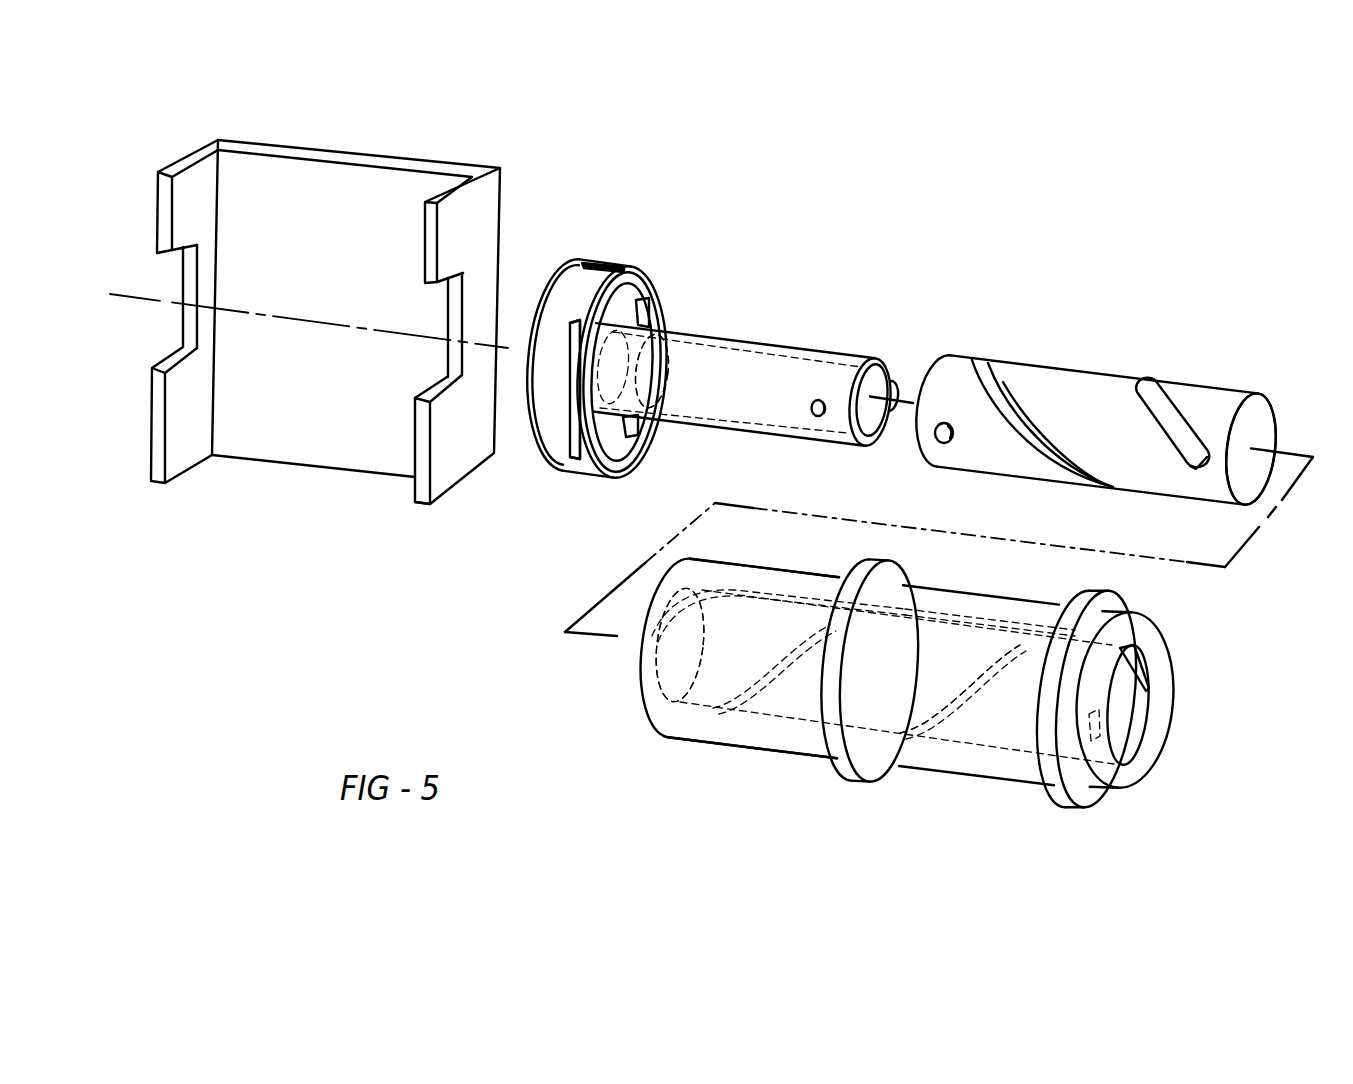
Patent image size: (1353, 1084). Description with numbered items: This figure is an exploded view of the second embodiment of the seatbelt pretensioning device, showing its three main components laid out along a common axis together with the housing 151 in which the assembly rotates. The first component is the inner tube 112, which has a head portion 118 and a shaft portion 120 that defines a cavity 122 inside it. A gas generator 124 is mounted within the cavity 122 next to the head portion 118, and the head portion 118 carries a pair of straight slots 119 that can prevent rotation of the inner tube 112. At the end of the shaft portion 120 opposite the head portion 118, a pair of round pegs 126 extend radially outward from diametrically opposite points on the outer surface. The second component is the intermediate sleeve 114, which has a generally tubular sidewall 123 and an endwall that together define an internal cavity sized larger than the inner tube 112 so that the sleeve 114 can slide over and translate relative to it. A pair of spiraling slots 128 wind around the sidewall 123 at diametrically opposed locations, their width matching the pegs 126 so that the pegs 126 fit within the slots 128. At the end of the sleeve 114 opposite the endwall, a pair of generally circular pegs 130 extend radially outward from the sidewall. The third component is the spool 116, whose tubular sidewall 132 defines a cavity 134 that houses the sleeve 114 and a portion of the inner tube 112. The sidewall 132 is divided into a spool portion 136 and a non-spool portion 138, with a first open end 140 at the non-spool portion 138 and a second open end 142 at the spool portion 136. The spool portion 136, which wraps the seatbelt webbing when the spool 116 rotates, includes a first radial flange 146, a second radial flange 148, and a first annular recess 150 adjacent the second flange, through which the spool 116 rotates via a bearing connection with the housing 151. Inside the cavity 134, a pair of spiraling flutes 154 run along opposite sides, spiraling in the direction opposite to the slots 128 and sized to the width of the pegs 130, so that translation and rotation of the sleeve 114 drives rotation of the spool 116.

The housing 151 is at (407, 160).
The inner tube 112 is at (743, 321).
The head portion 118 is at (622, 272).
The straight slots 119 is at (575, 347).
The shaft portion 120 is at (805, 345).
The cavity 122 is at (875, 380).
The gas generator 124 is at (660, 370).
The round pegs 126 is at (818, 417).
The pegs 130 is at (940, 433).
The intermediate sleeve 114 is at (1076, 368).
The tubular sidewall 123 is at (1070, 390).
The spiraling slots 128 is at (1148, 385).
The spool 116 is at (881, 727).
The tubular sidewall 132 is at (783, 750).
The cavity 134 is at (740, 653).
The spool portion 136 is at (999, 802).
The non-spool portion 138 is at (711, 797).
The first open end 140 is at (657, 680).
The second open end 142 is at (1130, 722).
The first radial flange 146 is at (830, 757).
The second radial flange 148 is at (1065, 797).
The first annular recess 150 is at (1107, 795).
The spiraling flutes 154 is at (943, 697).